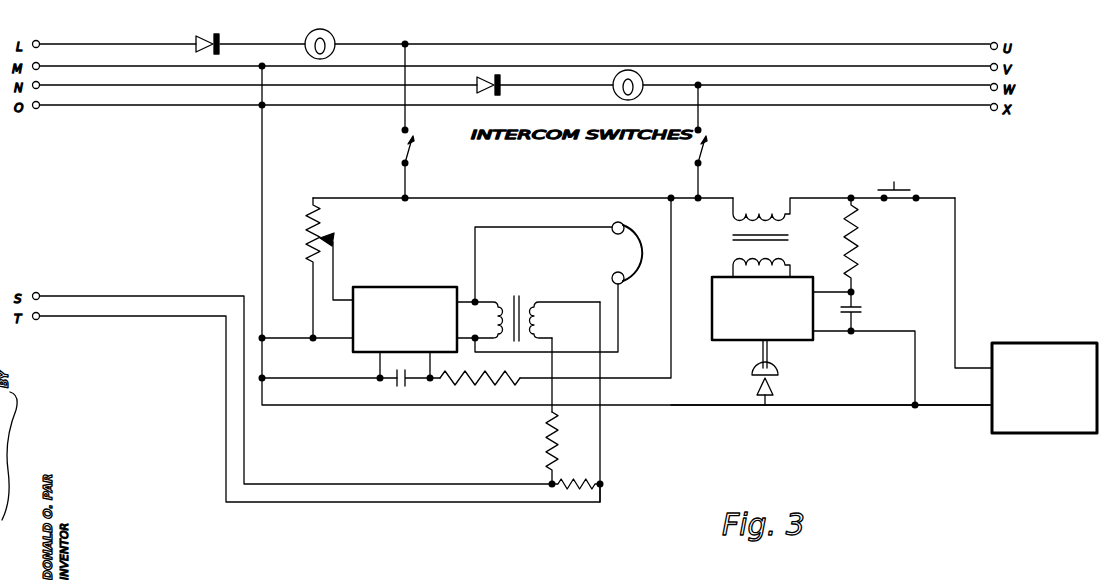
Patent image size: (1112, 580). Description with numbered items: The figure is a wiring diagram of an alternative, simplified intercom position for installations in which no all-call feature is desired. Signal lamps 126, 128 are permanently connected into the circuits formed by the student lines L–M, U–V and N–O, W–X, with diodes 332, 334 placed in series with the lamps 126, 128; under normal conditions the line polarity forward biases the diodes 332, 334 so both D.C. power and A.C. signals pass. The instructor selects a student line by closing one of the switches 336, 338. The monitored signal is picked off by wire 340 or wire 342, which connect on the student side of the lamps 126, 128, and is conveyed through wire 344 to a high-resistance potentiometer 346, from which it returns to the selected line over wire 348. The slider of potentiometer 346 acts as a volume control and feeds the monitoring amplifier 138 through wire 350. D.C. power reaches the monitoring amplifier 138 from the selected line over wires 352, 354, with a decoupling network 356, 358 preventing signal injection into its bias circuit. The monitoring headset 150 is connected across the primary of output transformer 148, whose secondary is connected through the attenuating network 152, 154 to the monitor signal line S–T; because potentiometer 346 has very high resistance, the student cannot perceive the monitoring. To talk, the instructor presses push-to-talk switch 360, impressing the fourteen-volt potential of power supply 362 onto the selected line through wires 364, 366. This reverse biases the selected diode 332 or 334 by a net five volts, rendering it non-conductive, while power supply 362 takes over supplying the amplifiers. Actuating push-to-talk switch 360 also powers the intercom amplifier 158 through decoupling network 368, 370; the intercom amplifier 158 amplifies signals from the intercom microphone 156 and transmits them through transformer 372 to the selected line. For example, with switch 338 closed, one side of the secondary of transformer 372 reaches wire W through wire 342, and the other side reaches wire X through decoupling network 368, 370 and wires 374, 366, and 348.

The signal lamp 126 is at (318, 30).
The signal lamp 128 is at (683, 40).
The monitoring amplifier 138 is at (432, 275).
The output transformer 148 is at (519, 299).
The monitoring headset 150 is at (657, 262).
The attenuating network resistor 152 is at (548, 433).
The attenuating network resistor 154 is at (586, 492).
The intercom microphone 156 is at (752, 371).
The intercom amplifier 158 is at (736, 339).
The diode 332 is at (192, 40).
The diode 334 is at (480, 76).
The switch 336 is at (412, 153).
The switch 338 is at (705, 153).
The wire 340 is at (408, 124).
The wire 342 is at (701, 124).
The wire 344 is at (572, 198).
The potentiometer 346 is at (321, 250).
The wire 348 is at (263, 165).
The wire 350 is at (334, 241).
The wire 352 is at (671, 288).
The wire 354 is at (323, 376).
The decoupling network capacitor 356 is at (400, 388).
The decoupling network resistor 358 is at (473, 384).
The push-to-talk switch 360 is at (912, 189).
The power supply 362 is at (1040, 433).
The wire 364 is at (955, 276).
The wire 366 is at (775, 410).
The decoupling network resistor 368 is at (858, 242).
The decoupling network capacitor 370 is at (862, 310).
The transformer 372 is at (733, 237).
The wire 374 is at (915, 362).